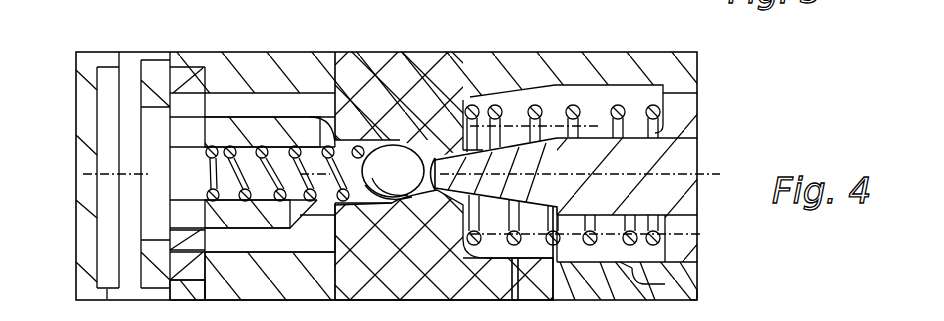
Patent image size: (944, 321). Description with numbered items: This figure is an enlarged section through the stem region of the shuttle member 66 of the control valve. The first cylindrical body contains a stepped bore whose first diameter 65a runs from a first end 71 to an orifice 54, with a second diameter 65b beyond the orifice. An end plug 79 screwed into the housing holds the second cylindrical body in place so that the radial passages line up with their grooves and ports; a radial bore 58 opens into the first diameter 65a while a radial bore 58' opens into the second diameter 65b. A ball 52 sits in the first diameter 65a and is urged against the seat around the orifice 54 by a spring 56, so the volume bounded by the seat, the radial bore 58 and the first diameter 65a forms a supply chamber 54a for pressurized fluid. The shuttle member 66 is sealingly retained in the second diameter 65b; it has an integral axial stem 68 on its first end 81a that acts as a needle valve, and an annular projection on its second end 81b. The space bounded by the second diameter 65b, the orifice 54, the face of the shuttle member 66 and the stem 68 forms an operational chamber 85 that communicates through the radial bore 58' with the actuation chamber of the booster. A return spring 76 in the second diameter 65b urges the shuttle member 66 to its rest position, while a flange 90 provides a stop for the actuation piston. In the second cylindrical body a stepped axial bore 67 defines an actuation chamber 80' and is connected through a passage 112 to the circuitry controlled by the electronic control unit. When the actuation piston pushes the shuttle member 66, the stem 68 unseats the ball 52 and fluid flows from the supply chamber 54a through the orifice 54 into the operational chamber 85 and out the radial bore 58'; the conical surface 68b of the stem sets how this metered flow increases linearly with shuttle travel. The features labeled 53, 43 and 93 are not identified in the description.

The end plug 79 is at (87, 108).
The first end 71 is at (127, 70).
The radial bore 58 is at (73, 305).
The spring 56 is at (242, 143).
The first diameter 65a is at (240, 143).
The second end 81b is at (353, 300).
The ball 52 is at (300, 298).
The supply chamber 54a is at (323, 93).
The ball 53 is at (418, 150).
The conical surface 68b is at (420, 300).
The first end 81a is at (445, 140).
The orifice 54 is at (448, 145).
The axial stem 68 is at (518, 148).
The shuttle member 66 is at (697, 158).
The operational chamber 85 is at (617, 89).
The return spring 76 is at (703, 93).
The radial bore 58' is at (509, 264).
The second diameter 65b is at (697, 280).
The passage 43 is at (572, 291).
The passage 93 is at (615, 291).
The stepped axial bore 67 is at (656, 291).
The flange 90 is at (697, 291).
The actuation chamber 80' is at (743, 305).
The passage 112 is at (822, 320).